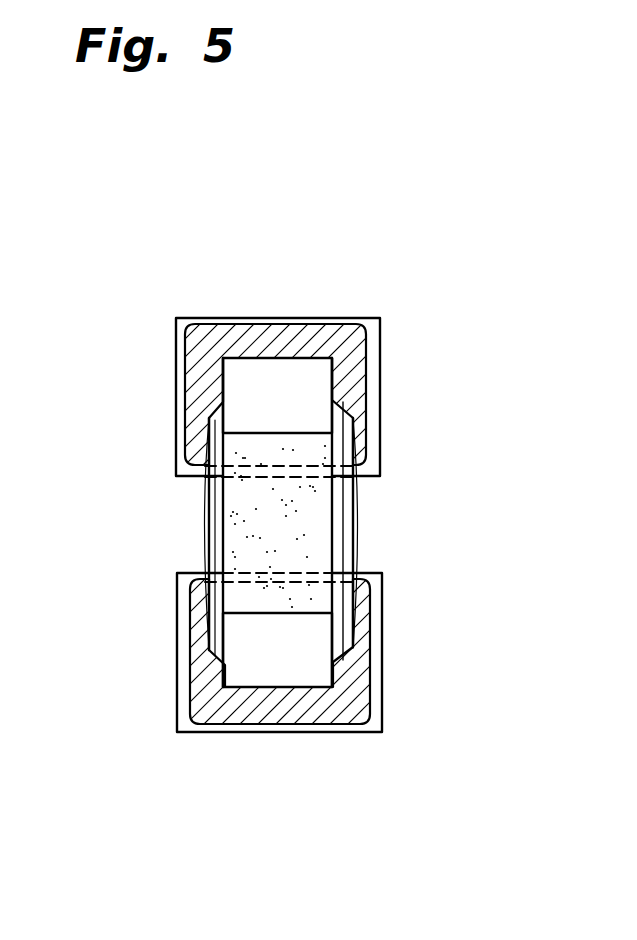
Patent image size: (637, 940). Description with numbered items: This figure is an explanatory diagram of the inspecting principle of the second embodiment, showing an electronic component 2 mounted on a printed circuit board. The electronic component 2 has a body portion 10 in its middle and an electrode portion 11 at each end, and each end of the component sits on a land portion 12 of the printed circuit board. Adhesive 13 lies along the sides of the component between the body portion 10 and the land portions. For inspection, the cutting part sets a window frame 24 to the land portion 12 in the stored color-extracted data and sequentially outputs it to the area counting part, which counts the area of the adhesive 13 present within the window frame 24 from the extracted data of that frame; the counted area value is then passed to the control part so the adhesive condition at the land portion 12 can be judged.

The electronic component 2 is at (250, 548).
The body portion 10 is at (240, 507).
The electrode portion 11 is at (255, 390).
The land portion 12 is at (270, 337).
The adhesive 13 is at (350, 527).
The window frame 24 is at (382, 332).